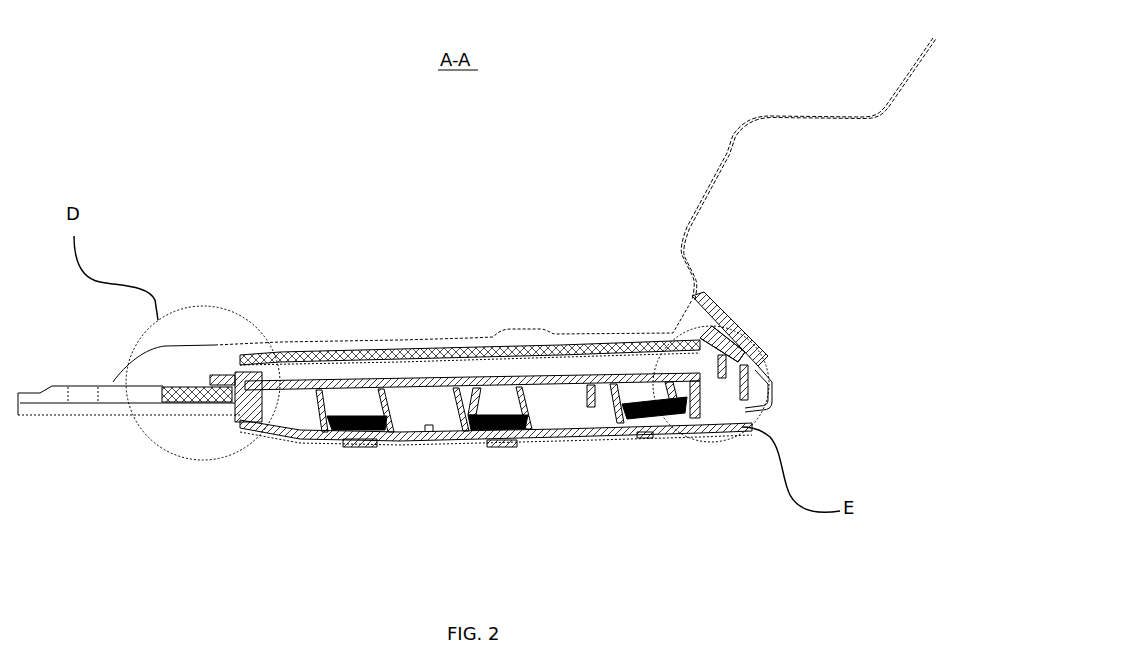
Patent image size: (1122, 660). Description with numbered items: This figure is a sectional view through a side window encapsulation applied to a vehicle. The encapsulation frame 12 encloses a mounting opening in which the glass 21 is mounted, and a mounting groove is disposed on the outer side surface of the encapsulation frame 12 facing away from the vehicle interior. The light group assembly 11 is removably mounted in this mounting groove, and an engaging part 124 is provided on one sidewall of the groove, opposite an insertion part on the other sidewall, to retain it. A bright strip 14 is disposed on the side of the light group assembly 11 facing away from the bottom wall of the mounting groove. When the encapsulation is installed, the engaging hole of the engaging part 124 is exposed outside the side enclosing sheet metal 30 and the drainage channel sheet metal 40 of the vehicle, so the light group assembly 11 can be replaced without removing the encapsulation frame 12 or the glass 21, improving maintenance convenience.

The light group assembly 11 is at (547, 400).
The encapsulation frame 12 is at (543, 346).
The bright strip 14 is at (715, 320).
The glass 21 is at (108, 413).
The side enclosing sheet metal 30 is at (432, 338).
The drainage channel sheet metal 40 is at (728, 157).
The engaging part 124 is at (741, 372).